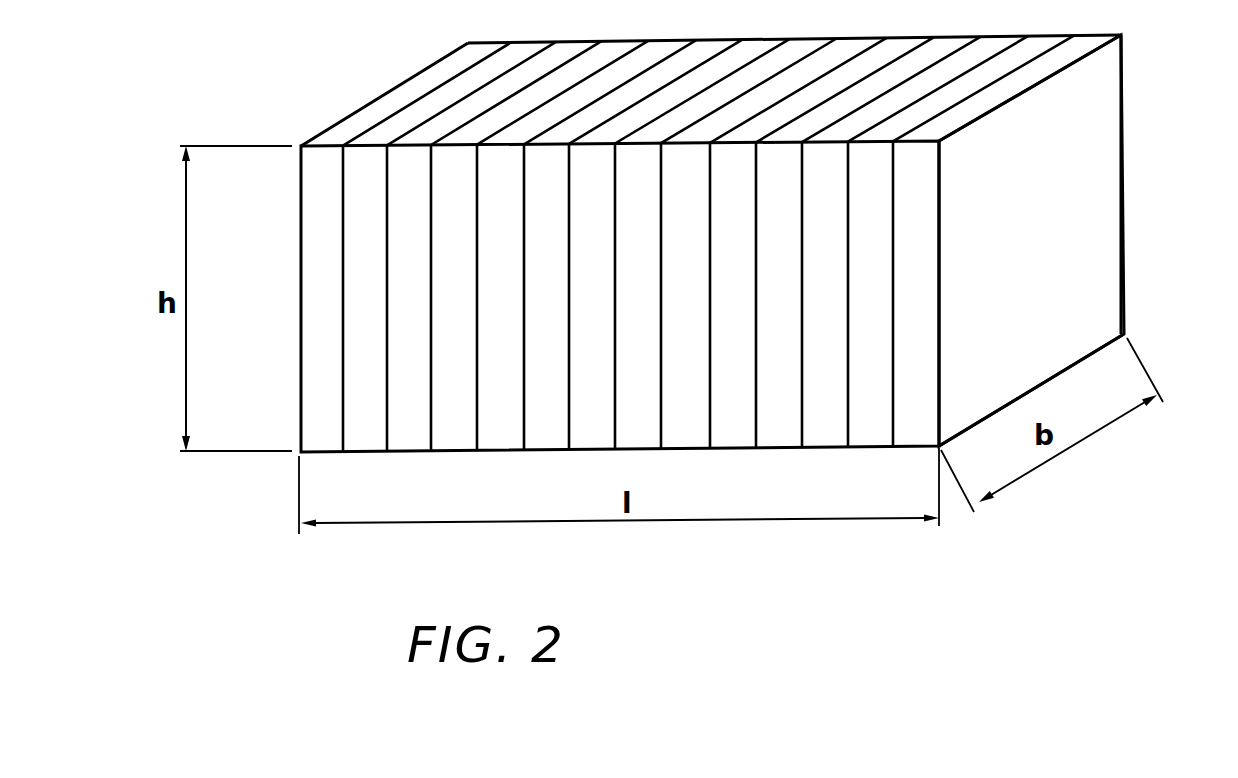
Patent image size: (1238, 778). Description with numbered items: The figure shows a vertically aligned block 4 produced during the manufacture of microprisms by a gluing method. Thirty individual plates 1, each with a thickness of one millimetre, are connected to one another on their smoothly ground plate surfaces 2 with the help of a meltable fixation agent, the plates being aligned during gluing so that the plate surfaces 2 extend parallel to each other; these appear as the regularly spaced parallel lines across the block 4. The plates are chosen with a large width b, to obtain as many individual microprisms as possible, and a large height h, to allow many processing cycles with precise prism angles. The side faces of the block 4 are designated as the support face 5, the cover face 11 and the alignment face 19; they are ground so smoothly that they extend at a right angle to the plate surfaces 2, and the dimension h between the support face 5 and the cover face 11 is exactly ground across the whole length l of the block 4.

The plate 1 is at (1121, 35).
The plate surface 2 is at (1082, 205).
The block 4 is at (705, 90).
The support face 5 is at (1033, 390).
The cover face 11 is at (1018, 82).
The alignment face 19 is at (922, 342).